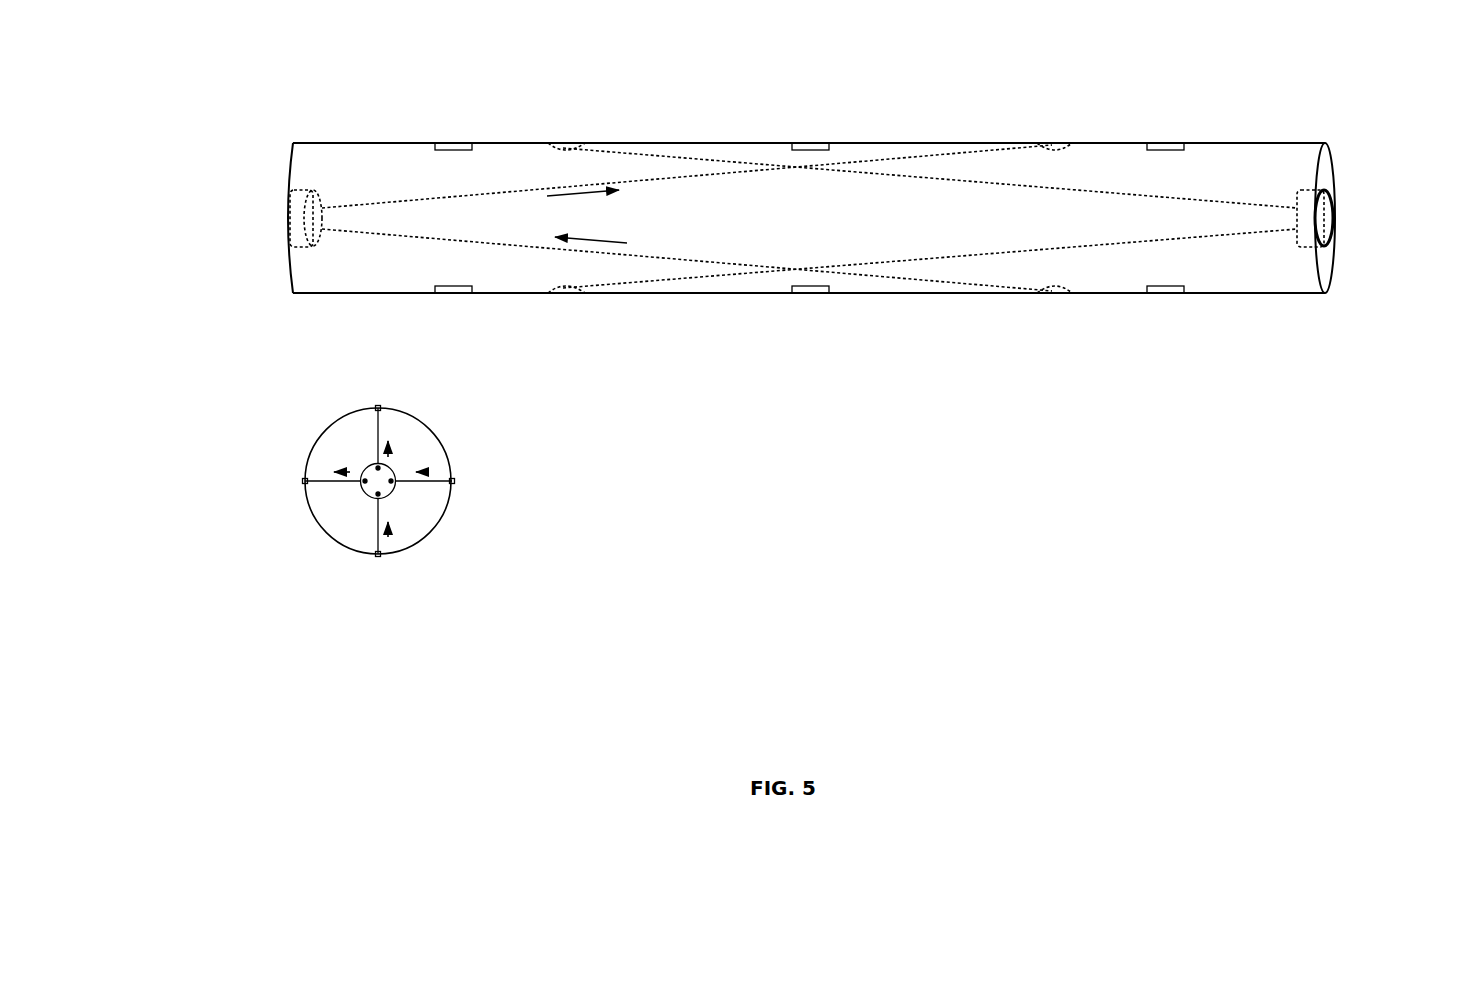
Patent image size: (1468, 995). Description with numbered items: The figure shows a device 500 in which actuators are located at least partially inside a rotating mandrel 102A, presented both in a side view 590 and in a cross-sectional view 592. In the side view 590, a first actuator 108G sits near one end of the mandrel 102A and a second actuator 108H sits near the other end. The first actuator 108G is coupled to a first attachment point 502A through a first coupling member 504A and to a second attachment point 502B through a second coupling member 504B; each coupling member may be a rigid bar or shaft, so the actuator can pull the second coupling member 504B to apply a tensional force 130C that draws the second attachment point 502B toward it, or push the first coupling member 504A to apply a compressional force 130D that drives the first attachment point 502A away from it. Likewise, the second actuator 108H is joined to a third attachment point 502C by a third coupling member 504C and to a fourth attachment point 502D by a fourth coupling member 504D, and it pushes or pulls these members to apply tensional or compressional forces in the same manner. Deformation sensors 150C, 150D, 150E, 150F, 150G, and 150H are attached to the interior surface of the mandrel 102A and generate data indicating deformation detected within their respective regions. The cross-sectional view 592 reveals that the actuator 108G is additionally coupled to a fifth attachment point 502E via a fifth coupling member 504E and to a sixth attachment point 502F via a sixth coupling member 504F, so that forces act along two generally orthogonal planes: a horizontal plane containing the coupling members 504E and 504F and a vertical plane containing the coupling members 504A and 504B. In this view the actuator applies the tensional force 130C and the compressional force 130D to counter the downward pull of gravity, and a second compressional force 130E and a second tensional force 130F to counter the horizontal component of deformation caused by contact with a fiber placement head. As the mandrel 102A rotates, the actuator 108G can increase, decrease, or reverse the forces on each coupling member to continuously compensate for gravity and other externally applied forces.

The device 500 is at (277, 61).
The side view 590 is at (188, 319).
The cross-sectional view 592 is at (188, 413).
The mandrel 102A is at (705, 143).
The first actuator 108G is at (320, 192).
The second actuator 108H is at (1300, 190).
The deformation sensor 150C is at (452, 293).
The deformation sensor 150D is at (810, 293).
The deformation sensor 150E is at (1163, 293).
The deformation sensor 150F is at (447, 143).
The deformation sensor 150G is at (810, 143).
The deformation sensor 150H is at (1163, 143).
The first attachment point 502A is at (1058, 150).
The second attachment point 502B is at (1063, 286).
The third attachment point 502C is at (563, 150).
The fourth attachment point 502D is at (563, 286).
The fifth attachment point 502E is at (305, 481).
The sixth attachment point 502F is at (454, 481).
The first coupling member 504A is at (720, 175).
The second coupling member 504B is at (725, 262).
The third coupling member 504C is at (960, 182).
The fourth coupling member 504D is at (982, 255).
The fifth coupling member 504E is at (318, 478).
The sixth coupling member 504F is at (452, 485).
The tensional force 130C is at (590, 238).
The compressional force 130D is at (588, 195).
The second compressional force 130E is at (345, 472).
The second tensional force 130F is at (417, 472).